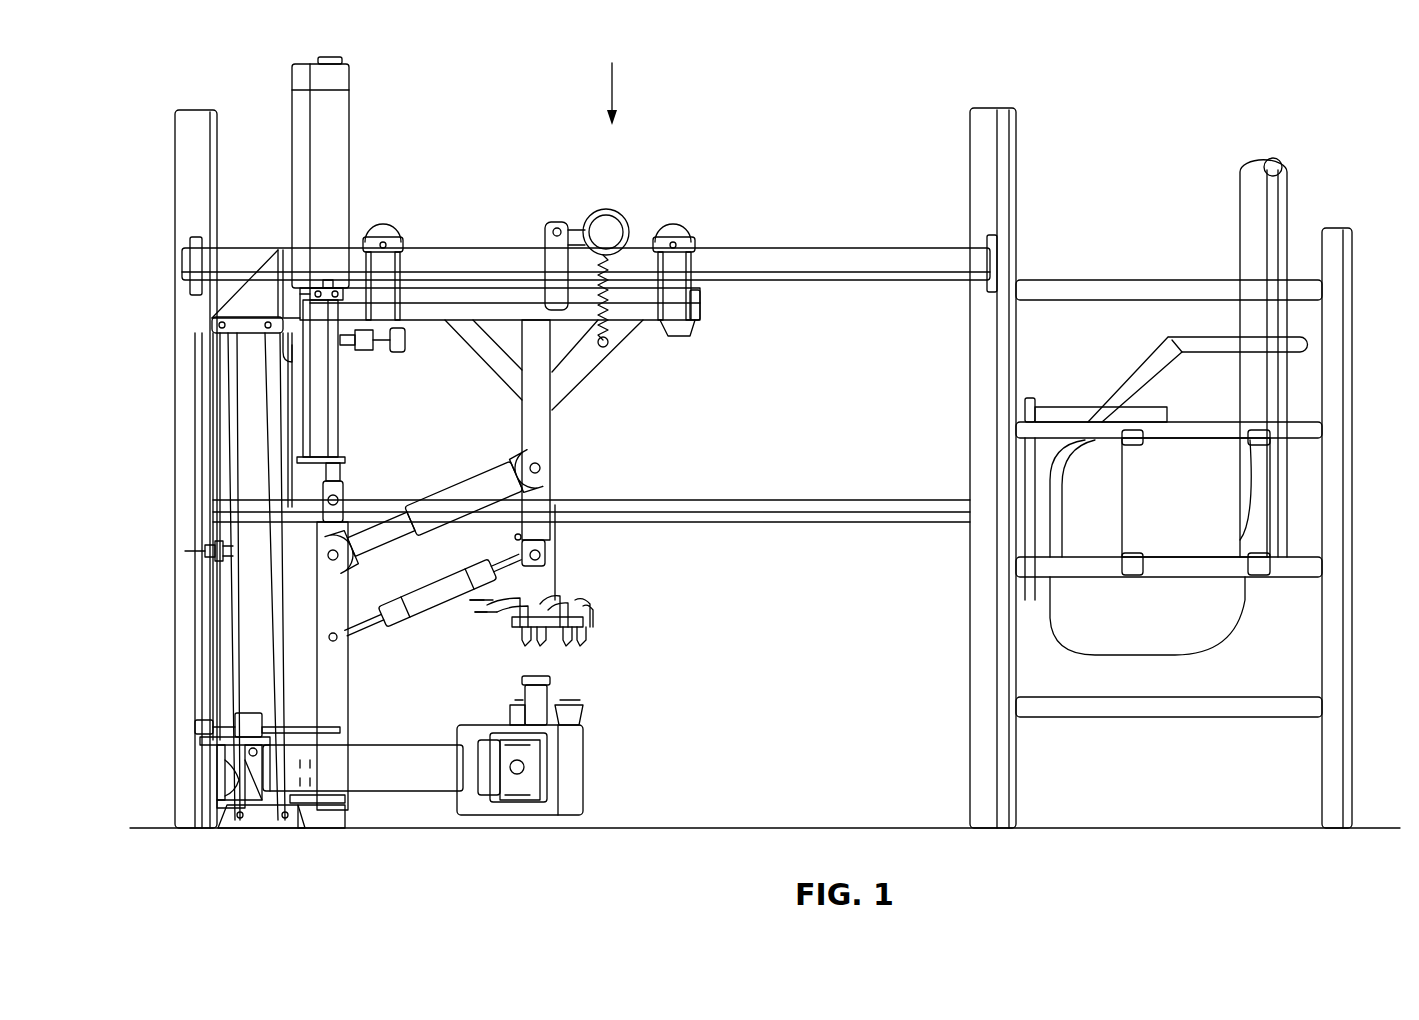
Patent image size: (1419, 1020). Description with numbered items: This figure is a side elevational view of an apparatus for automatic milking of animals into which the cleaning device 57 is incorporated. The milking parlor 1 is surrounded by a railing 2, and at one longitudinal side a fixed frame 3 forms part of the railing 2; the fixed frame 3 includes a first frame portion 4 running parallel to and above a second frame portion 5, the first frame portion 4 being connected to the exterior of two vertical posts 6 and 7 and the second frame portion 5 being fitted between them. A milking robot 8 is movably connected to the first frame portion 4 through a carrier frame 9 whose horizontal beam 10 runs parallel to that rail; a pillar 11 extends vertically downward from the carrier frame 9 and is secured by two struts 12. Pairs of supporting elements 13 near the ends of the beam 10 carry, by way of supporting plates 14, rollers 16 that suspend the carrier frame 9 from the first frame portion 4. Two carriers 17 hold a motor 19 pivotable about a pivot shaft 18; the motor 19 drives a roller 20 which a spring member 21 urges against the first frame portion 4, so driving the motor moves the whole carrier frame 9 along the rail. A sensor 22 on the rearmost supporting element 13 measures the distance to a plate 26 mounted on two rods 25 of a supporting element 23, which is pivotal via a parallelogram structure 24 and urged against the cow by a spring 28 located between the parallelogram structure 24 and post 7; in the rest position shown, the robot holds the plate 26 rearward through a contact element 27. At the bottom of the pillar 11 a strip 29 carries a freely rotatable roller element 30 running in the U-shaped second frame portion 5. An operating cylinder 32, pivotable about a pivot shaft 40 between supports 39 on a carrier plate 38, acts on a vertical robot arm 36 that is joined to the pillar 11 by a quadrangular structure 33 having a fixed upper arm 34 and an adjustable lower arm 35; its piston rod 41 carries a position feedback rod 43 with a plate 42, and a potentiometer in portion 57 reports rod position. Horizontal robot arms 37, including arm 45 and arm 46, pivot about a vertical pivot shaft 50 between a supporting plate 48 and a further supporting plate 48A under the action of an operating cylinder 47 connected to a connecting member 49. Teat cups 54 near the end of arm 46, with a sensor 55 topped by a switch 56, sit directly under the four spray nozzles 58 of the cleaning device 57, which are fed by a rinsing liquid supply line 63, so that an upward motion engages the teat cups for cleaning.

The milking parlor 1 is at (786, 235).
The railing 2 is at (1146, 281).
The fixed frame 3 is at (818, 399).
The first frame portion 4 is at (847, 250).
The second frame portion 5 is at (874, 500).
The vertical post 6 is at (978, 161).
The vertical post 7 is at (174, 150).
The milking robot 8 is at (615, 714).
The carrier frame 9 is at (508, 394).
The horizontal beam 10 is at (702, 297).
The pillar 11 is at (550, 440).
The struts 12 is at (480, 358).
The supporting elements 13 is at (680, 336).
The roller brackets 14 is at (400, 237).
The rollers 16 is at (381, 230).
The carriers 17 is at (549, 237).
The pivot shaft 18 is at (558, 228).
The motor 19 is at (610, 226).
The roller 20 is at (606, 210).
The spring member 21 is at (622, 334).
The sensor 22 is at (364, 346).
The supporting element 23 is at (283, 487).
The parallelogram structure 24 is at (236, 611).
The rods 25 is at (270, 548).
The plate 26 is at (280, 248).
The contact element 27 is at (290, 344).
The spring 28 is at (214, 556).
The strip 29 is at (515, 539).
The roller element 30 is at (546, 547).
The operating cylinder 32 is at (326, 159).
The quadrangular structure 33 is at (434, 576).
The upper arm 34 is at (472, 484).
The lower arm 35 is at (444, 608).
The vertical robot arm 36 is at (346, 660).
The robot arms 37 is at (402, 738).
The carrier plate 38 is at (378, 310).
The supports 39 is at (342, 280).
The pivot shaft 40 is at (308, 295).
The piston rod 41 is at (340, 420).
The plate 42 is at (336, 454).
The position feedback rod 43 is at (304, 418).
The arm 45 is at (444, 788).
The arm 46 is at (576, 746).
The operating cylinder 47 is at (237, 708).
The supporting plate 48 is at (328, 728).
The further supporting plate 48A is at (355, 804).
The connecting member 49 is at (225, 746).
The pivot shaft 50 is at (306, 812).
The teat cups 54 is at (582, 710).
The sensor 55 is at (526, 694).
The switch 56 is at (552, 680).
The cleaning device 57 is at (300, 142).
The spray nozzles 58 is at (598, 630).
The rinsing liquid supply line 63 is at (494, 612).